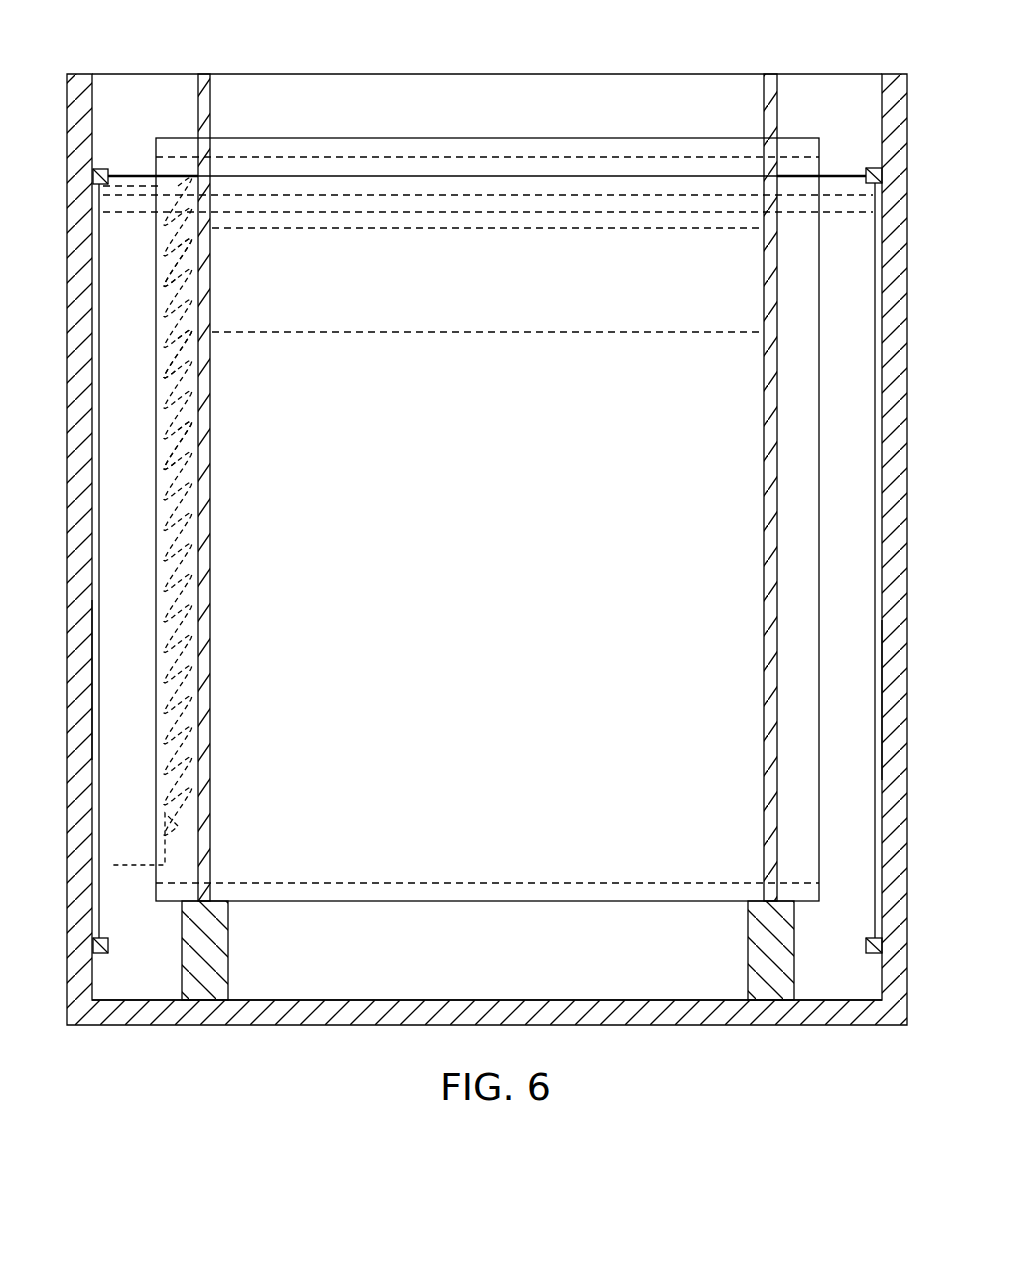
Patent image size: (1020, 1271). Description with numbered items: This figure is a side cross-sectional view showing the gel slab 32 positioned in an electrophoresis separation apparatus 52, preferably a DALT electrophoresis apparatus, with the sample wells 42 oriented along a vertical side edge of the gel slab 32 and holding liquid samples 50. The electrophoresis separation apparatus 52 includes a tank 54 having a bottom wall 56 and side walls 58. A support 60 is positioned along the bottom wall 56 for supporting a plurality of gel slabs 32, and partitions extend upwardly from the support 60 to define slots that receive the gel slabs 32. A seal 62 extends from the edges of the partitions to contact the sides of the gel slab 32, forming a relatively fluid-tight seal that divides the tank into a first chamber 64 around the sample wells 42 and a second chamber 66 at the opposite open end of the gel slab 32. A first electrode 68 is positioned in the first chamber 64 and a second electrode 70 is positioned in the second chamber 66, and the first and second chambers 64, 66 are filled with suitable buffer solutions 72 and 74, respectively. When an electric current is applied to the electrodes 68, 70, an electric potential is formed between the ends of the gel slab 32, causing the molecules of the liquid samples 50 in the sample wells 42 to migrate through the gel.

The gel slab 32 is at (582, 133).
The sample wells 42 is at (202, 302).
The liquid samples 50 is at (163, 248).
The electrophoresis separation apparatus 52 is at (674, 54).
The tank 54 is at (891, 66).
The bottom wall 56 is at (518, 1000).
The side walls 58 is at (78, 722).
The support 60 is at (230, 935).
The seal 62 is at (212, 848).
The first chamber 64 is at (140, 156).
The second chamber 66 is at (832, 154).
The first electrode 68 is at (100, 362).
The second electrode 70 is at (873, 360).
The buffer solution 72 is at (118, 172).
The buffer solution 74 is at (857, 166).